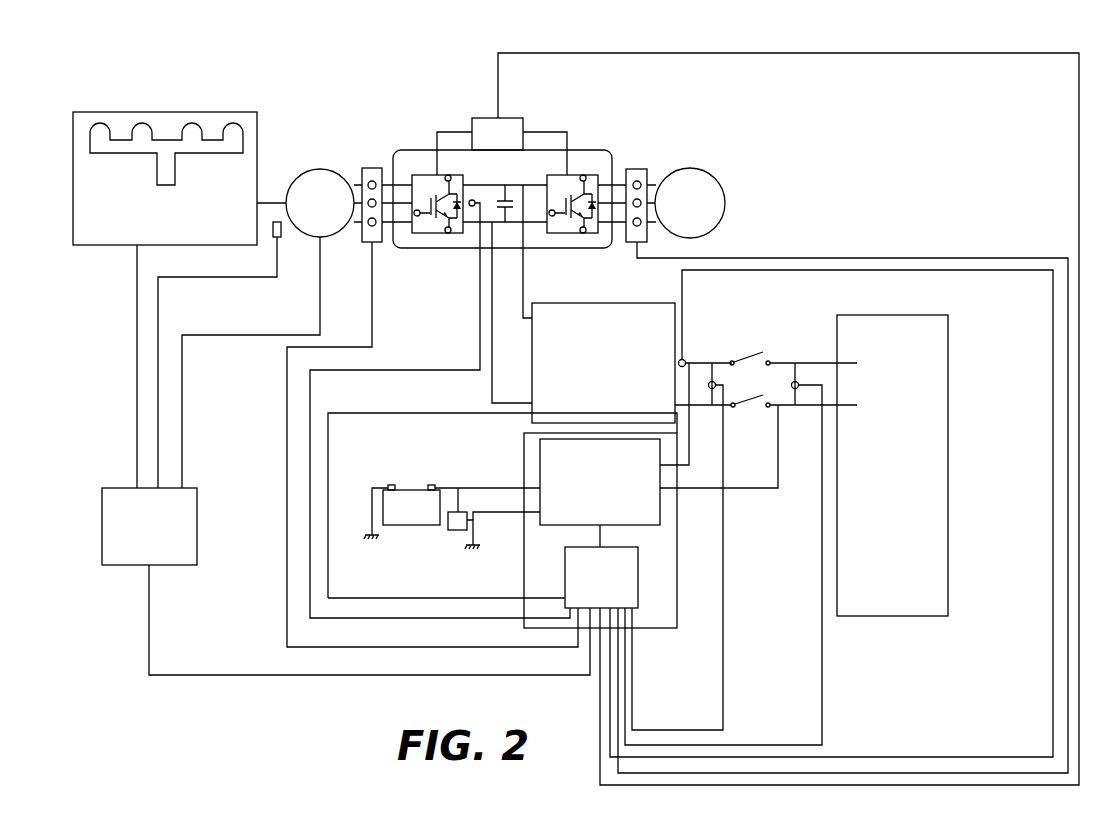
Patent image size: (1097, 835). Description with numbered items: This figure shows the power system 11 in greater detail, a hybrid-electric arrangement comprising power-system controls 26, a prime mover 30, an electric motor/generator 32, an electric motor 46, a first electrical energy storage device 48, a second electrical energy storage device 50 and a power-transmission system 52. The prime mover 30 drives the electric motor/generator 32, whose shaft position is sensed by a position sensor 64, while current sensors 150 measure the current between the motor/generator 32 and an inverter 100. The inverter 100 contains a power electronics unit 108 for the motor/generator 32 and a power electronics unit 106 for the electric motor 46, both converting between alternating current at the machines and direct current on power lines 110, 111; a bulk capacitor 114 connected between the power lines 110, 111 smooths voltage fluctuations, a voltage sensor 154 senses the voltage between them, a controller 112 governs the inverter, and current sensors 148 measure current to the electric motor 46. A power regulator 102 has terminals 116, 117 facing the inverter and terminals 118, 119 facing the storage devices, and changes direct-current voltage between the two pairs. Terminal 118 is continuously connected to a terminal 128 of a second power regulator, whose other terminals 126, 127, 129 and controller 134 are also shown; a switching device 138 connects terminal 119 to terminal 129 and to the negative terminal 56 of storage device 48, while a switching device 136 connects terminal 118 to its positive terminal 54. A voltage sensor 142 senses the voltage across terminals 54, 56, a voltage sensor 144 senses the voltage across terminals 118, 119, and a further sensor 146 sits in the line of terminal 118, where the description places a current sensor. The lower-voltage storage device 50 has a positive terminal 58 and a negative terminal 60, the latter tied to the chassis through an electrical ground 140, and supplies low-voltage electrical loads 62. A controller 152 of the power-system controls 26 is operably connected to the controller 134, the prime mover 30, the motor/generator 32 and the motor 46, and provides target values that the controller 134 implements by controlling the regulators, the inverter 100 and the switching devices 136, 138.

The power system 11 is at (580, 43).
The power-system controls 26 is at (622, 140).
The prime mover 30 is at (165, 300).
The electric motor/generator 32 is at (313, 172).
The electric motor 46 is at (725, 203).
The first electrical energy storage device 48 is at (892, 465).
The second electrical energy storage device 50 is at (412, 527).
The power-transmission system 52 is at (615, 123).
The positive terminal 54 is at (833, 358).
The negative terminal 56 is at (835, 405).
The positive terminal 58 is at (432, 485).
The negative terminal 60 is at (393, 485).
The electrical loads 62 is at (457, 532).
The position sensor 64 is at (282, 237).
The inverter 100 is at (592, 150).
The power regulator 102 is at (603, 363).
The power electronics unit 106 is at (597, 172).
The power electronics unit 108 is at (428, 173).
The power line 110 is at (540, 183).
The power line 111 is at (533, 222).
The controller 112 is at (508, 137).
The bulk capacitor 114 is at (500, 197).
The input/output terminal 116 is at (528, 318).
The input/output terminal 117 is at (513, 403).
The input/output terminal 118 is at (710, 363).
The input/output terminal 119 is at (705, 407).
The input/output terminal 126 is at (533, 487).
The input/output terminal 127 is at (535, 513).
The input/output terminal 128 is at (667, 470).
The input/output terminal 129 is at (667, 490).
The controller 134 is at (601, 577).
The switching device 136 is at (748, 355).
The switching device 138 is at (750, 400).
The electrical ground 140 is at (372, 540).
The voltage sensor 142 is at (796, 381).
The voltage sensor 144 is at (718, 383).
The junction node 146 is at (684, 360).
The current sensors 148 is at (650, 173).
The current sensors 150 is at (365, 168).
The controller 152 is at (346, 581).
The voltage sensor 154 is at (472, 206).